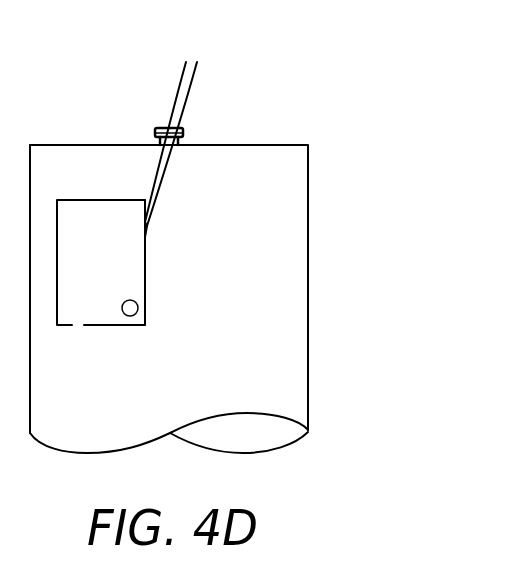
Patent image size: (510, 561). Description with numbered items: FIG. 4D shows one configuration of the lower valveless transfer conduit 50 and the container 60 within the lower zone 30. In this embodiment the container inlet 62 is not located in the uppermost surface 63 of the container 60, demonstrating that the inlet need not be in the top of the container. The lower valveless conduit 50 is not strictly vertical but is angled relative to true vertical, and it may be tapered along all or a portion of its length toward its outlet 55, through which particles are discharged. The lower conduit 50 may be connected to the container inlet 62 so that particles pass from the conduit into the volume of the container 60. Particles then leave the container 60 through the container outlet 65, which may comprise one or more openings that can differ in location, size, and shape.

The lower zone 30 is at (309, 172).
The lower valveless transfer conduit 50 is at (187, 80).
The outlet 55 is at (148, 226).
The container 60 is at (148, 265).
The container inlet 62 is at (160, 246).
The uppermost surface 63 is at (73, 202).
The container outlet 65 is at (132, 312).